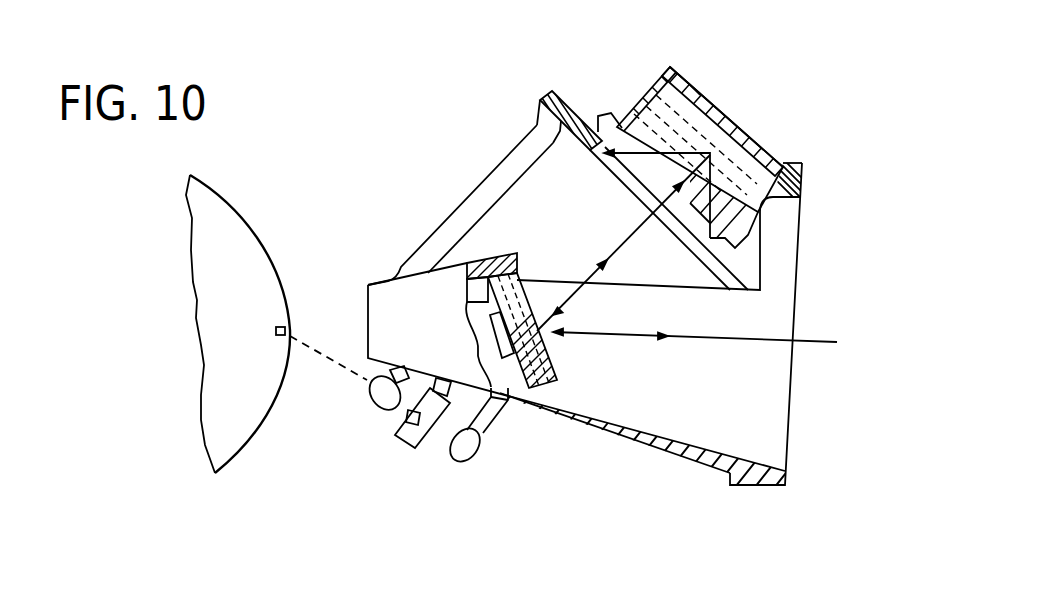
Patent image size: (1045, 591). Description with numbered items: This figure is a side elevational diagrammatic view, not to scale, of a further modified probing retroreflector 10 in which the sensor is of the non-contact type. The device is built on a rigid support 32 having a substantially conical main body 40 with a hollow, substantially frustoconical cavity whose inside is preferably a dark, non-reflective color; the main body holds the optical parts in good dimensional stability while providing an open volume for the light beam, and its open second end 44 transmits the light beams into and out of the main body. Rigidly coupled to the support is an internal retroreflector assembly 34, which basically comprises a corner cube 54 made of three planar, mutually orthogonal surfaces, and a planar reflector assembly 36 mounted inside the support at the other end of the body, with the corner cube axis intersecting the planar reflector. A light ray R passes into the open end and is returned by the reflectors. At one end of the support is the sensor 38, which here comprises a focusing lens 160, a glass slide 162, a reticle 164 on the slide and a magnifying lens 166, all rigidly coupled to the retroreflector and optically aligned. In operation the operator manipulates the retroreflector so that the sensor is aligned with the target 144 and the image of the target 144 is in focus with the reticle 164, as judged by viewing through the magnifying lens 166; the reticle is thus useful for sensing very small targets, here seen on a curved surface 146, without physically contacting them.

The probing retroreflector 10 is at (754, 140).
The rigid support 32 is at (698, 477).
The internal retroreflector assembly 34 is at (616, 98).
The planar reflector assembly 36 is at (522, 395).
The sensor 38 is at (489, 465).
The main body 40 is at (633, 440).
The second end 44 is at (788, 418).
The corner cube 54 is at (774, 146).
The target 144 is at (262, 330).
The window 146 is at (270, 231).
The focusing lens 160 is at (372, 410).
The glass slide 162 is at (412, 450).
The reticle 164 is at (408, 412).
The magnifying lens 166 is at (472, 465).
The light ray R is at (834, 326).